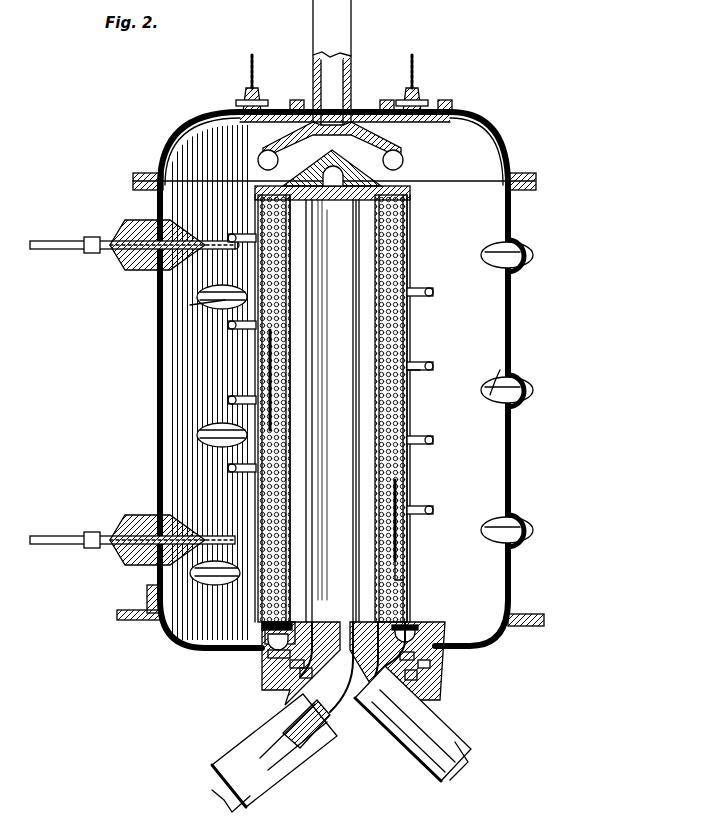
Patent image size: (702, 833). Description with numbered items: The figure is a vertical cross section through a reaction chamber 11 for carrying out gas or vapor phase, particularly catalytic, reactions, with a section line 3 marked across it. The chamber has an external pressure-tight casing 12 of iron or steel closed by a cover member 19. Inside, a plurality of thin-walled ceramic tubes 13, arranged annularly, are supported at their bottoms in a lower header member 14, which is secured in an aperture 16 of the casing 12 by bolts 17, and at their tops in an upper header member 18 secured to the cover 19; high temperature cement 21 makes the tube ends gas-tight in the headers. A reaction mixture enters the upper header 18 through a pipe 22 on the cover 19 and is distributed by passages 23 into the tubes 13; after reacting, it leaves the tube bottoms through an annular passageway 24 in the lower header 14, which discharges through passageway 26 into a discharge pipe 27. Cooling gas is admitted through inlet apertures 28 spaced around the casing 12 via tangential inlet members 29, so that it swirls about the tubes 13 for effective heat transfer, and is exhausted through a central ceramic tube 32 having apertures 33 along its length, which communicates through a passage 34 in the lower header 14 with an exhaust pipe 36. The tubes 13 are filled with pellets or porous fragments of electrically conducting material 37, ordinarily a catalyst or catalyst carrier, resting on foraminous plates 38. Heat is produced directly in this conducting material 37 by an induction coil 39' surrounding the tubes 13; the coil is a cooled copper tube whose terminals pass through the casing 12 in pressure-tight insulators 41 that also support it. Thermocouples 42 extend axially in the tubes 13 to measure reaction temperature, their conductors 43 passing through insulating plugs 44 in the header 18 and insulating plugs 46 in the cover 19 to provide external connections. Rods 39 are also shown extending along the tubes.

The reaction chamber 11 is at (160, 165).
The external pressure-tight casing 12 is at (508, 327).
The thin-walled ceramic tubes 13 is at (408, 244).
The lower header member 14 is at (352, 660).
The aperture 16 is at (416, 640).
The bolts 17 is at (430, 666).
The upper header member 18 is at (404, 168).
The cover member 19 is at (500, 147).
The high temperature cement 21 is at (258, 150).
The pipe 22 is at (351, 40).
The passages 23 is at (352, 128).
The annular passageway 24 is at (278, 668).
The passageway 26 is at (352, 700).
The discharge pipe 27 is at (462, 752).
The inlet apertures 28 is at (200, 305).
The tangential inlet members 29 is at (200, 282).
The ceramic tube 32 is at (360, 505).
The apertures 33 is at (345, 390).
The passage 34 is at (305, 738).
The exhaust pipe 36 is at (235, 766).
The electrically conducting material 37 is at (408, 272).
The foraminous plates 38 is at (412, 625).
The baffle rod 39 is at (417, 566).
The induction coil 39' is at (439, 357).
The pressure-tight insulators 41 is at (150, 236).
The thermocouples 42 is at (266, 372).
The conductors 43 is at (260, 245).
The insulating plugs 44 is at (290, 100).
The insulating plugs 46 is at (250, 98).
The section line 3- 3 is at (160, 432).